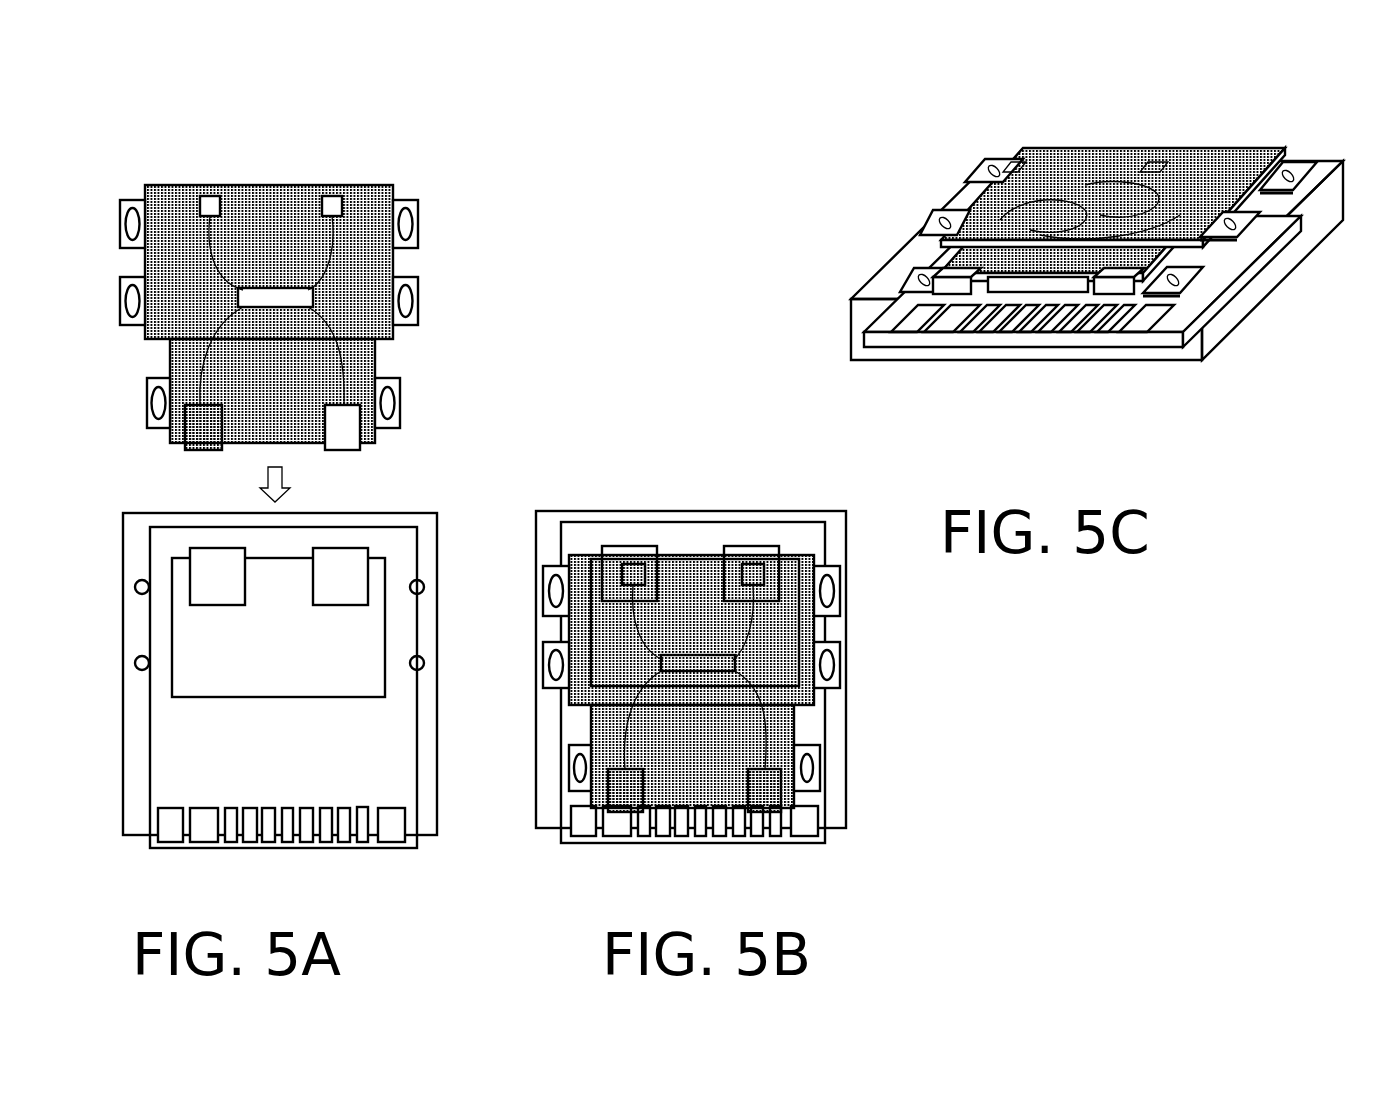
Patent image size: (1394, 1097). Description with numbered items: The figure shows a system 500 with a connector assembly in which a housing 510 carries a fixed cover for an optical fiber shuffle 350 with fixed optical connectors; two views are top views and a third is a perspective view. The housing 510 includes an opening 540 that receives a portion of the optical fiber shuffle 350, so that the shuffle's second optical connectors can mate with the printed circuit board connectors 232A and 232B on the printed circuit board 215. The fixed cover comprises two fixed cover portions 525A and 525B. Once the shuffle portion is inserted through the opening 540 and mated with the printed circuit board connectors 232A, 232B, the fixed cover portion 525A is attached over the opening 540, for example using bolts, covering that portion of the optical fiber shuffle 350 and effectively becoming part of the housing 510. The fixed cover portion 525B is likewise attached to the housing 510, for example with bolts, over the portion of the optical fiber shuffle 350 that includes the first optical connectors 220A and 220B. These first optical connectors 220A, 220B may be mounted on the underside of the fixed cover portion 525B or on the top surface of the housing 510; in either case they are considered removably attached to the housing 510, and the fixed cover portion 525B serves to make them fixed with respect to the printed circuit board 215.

In FIG. 5A, the system 500 is at (311, 489).
In FIG. 5B, the system 500 is at (714, 617).
In FIG. 5C, the system 500 is at (1075, 246).
In FIG. 5A, the housing 510 is at (438, 763).
In FIG. 5B, the housing 510 is at (842, 668).
In FIG. 5C, the housing 510 is at (876, 269).
In FIG. 5A, the printed circuit board 215 is at (148, 745).
In FIG. 5B, the printed circuit board 215 is at (571, 727).
In FIG. 5C, the printed circuit board 215 is at (1227, 307).
In FIG. 5A, the opening 540 is at (380, 647).
In FIG. 5A, the printed circuit board connector 232A is at (190, 567).
In FIG. 5A, the printed circuit board connector 232B is at (368, 567).
In FIG. 5A, the optical fiber shuffle 350 is at (317, 307).
In FIG. 5A, the fixed cover portion 525A is at (322, 185).
In FIG. 5B, the fixed cover portion 525A is at (689, 553).
In FIG. 5C, the fixed cover portion 525A is at (978, 195).
In FIG. 5A, the fixed cover portion 525B is at (377, 367).
In FIG. 5B, the fixed cover portion 525B is at (798, 736).
In FIG. 5C, the fixed cover portion 525B is at (935, 254).
In FIG. 5A, the first optical connector 220A is at (197, 450).
In FIG. 5B, the first optical connector 220A is at (611, 799).
In FIG. 5C, the first optical connector 220A is at (980, 300).
In FIG. 5A, the first optical connector 220B is at (352, 450).
In FIG. 5B, the first optical connector 220B is at (775, 797).
In FIG. 5C, the first optical connector 220B is at (1101, 300).